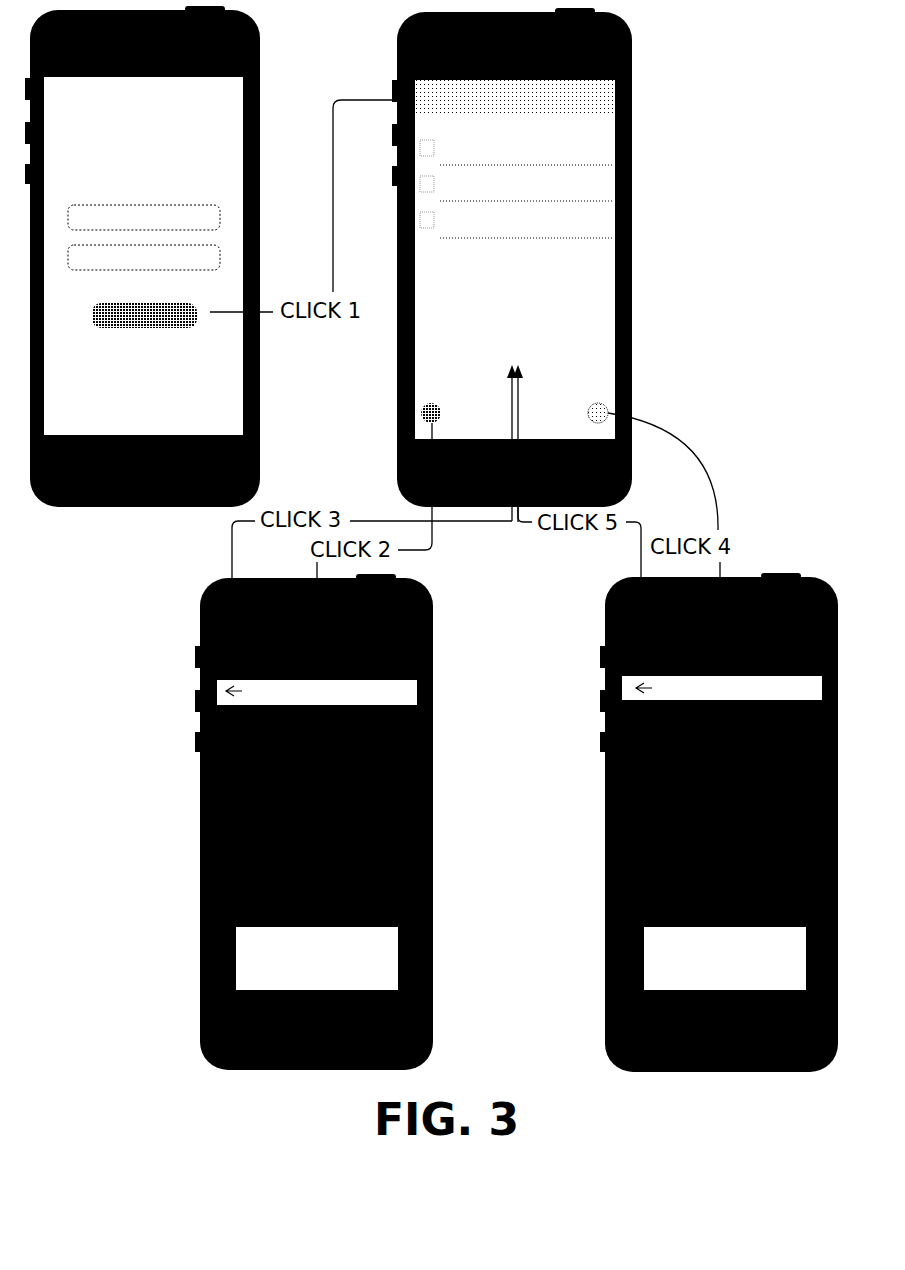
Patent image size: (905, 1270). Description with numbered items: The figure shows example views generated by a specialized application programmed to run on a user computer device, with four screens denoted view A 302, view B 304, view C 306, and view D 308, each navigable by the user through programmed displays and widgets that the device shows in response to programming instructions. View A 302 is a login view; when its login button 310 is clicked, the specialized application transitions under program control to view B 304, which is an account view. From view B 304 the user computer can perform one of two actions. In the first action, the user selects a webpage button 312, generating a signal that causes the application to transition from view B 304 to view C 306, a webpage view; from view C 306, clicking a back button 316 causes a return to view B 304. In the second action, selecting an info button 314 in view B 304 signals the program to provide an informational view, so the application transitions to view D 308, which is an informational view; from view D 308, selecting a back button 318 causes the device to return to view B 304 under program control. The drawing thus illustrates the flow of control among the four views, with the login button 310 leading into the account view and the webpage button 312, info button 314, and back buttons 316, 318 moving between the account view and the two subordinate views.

The view A 302 is at (142, 256).
The view B 304 is at (512, 265).
The view C 306 is at (314, 822).
The view D 308 is at (719, 822).
The login button 310 is at (150, 328).
The webpage button 312 is at (431, 402).
The info button 314 is at (603, 402).
The back button 316 is at (238, 692).
The back button 318 is at (642, 689).